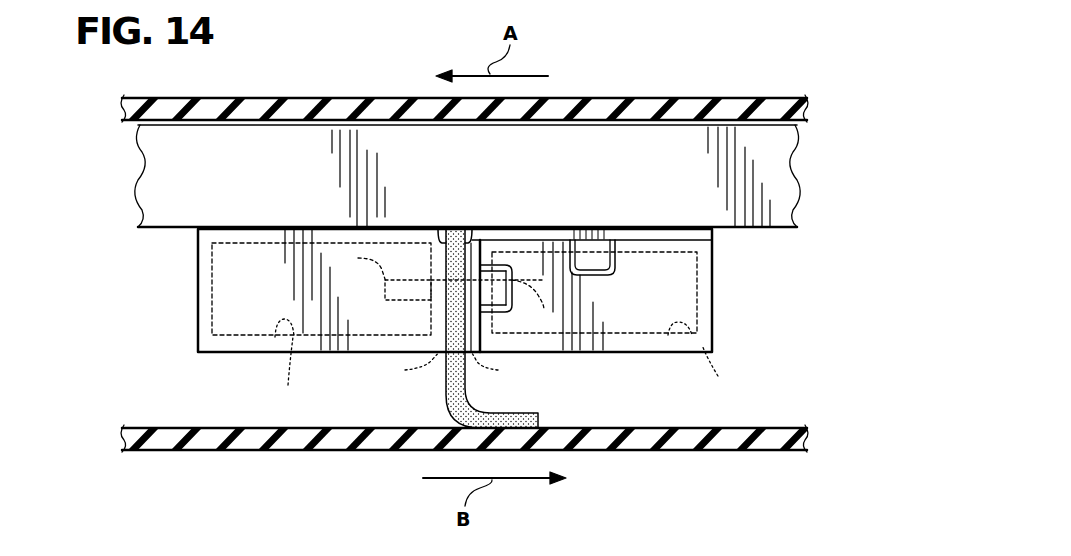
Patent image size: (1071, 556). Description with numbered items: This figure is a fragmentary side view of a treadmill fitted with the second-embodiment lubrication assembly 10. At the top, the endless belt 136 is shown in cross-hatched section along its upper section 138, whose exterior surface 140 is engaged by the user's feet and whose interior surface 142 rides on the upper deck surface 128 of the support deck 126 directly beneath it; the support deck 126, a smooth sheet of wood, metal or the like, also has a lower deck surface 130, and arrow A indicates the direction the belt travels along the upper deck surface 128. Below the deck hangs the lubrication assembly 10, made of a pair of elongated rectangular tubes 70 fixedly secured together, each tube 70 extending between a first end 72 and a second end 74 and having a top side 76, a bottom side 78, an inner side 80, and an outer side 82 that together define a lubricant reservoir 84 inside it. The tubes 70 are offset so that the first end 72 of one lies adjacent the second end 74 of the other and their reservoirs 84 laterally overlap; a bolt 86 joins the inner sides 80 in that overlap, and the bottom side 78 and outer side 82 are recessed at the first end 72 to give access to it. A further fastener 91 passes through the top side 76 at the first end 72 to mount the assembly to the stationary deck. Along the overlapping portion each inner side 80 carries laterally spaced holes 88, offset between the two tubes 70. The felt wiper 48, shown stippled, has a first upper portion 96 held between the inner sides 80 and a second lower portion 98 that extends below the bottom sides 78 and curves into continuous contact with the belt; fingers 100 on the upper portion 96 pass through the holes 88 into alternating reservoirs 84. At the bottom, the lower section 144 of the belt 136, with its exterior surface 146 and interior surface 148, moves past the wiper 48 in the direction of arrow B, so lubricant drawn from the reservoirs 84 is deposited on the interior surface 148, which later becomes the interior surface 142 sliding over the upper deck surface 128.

The lubrication assembly 10 is at (126, 252).
The wiper 48 is at (450, 412).
The elongated rectangular tube 70 is at (200, 335).
The first end 72 is at (680, 284).
The second end 74 is at (212, 278).
The top side 76 is at (268, 226).
The bottom side 78 is at (250, 355).
The inner side 80 is at (441, 236).
The outer side 82 is at (197, 235).
The reservoir 84 is at (508, 362).
The bolt 86 is at (490, 266).
The hole 88 is at (452, 367).
The fastener 91 is at (612, 252).
The first upper portion 96 is at (457, 232).
The second lower portion 98 is at (530, 415).
The finger 100 is at (440, 291).
The support deck 126 is at (790, 160).
The upper deck surface 128 is at (642, 125).
The lower deck surface 130 is at (778, 228).
The endless belt 136 is at (727, 106).
The upper section 138 is at (288, 106).
The exterior surface 140 is at (172, 98).
The interior surface 142 is at (128, 122).
The lower section 144 is at (203, 442).
The exterior surface 146 is at (240, 452).
The interior surface 148 is at (147, 426).